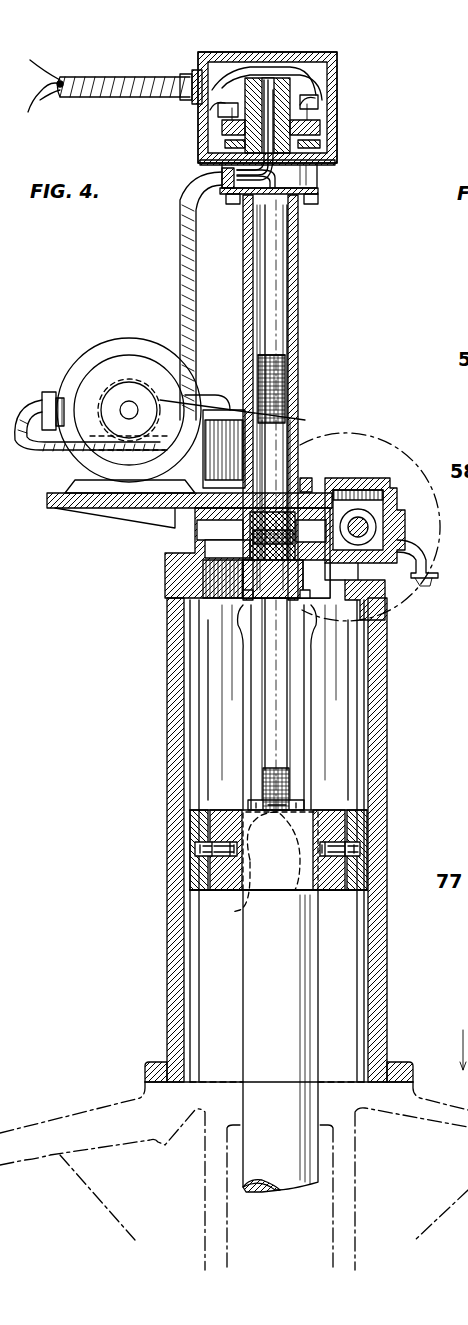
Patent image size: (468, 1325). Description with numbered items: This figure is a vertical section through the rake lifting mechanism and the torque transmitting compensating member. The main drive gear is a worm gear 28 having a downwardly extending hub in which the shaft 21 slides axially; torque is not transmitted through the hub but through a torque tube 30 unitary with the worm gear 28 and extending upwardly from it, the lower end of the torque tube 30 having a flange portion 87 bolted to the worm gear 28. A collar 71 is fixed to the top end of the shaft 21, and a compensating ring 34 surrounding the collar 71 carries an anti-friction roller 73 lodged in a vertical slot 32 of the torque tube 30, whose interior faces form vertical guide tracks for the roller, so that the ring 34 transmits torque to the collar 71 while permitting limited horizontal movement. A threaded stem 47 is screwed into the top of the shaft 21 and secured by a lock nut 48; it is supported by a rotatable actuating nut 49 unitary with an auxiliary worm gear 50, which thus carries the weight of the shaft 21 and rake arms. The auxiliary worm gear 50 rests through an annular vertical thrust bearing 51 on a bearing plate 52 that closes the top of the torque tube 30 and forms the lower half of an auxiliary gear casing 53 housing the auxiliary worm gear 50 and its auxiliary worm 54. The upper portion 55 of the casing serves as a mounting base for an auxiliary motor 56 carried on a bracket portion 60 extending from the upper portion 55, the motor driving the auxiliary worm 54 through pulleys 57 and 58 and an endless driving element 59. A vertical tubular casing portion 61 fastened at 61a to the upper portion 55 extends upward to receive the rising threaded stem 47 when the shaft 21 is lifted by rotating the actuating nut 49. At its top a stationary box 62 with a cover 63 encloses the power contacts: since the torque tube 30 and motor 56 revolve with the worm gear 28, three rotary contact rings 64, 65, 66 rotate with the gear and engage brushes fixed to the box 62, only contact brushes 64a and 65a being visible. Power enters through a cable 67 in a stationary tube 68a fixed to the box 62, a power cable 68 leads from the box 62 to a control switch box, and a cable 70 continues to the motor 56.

The shaft 21 is at (250, 1096).
The worm gear 28 is at (89, 1109).
The torque tube 30 is at (388, 768).
The vertical slot 32 is at (301, 733).
The compensating ring 34 is at (355, 810).
The threaded stem 47 is at (265, 735).
The lock nut 48 is at (255, 800).
The actuating nut 49 is at (308, 640).
The auxiliary worm gear 50 is at (170, 562).
The annular vertical thrust bearing 51 is at (212, 598).
The bearing plate 52 is at (190, 600).
The auxiliary gear casing 53 is at (168, 532).
The auxiliary worm 54 is at (360, 516).
The upper portion of auxiliary gear casing 55 is at (392, 508).
The auxiliary motor 56 is at (112, 340).
The pulley 57 is at (103, 398).
The pulley 58 is at (422, 470).
The endless driving element 59 is at (322, 425).
The bracket portion 60 is at (54, 510).
The vertical tubular casing portion 61 is at (298, 320).
The fastening 61a is at (310, 480).
The stationary box 62 is at (356, 111).
The cover 63 is at (305, 70).
The rotary contact ring 64 is at (310, 120).
The contact brush 64a is at (220, 128).
The rotary contact ring 65 is at (210, 110).
The contact brush 65a is at (322, 96).
The rotary contact ring 66 is at (305, 68).
The cable 67 is at (44, 90).
The power cable 68 is at (172, 260).
The stationary tube 68a is at (132, 76).
The cable 70 is at (38, 450).
The collar 71 is at (333, 890).
The anti-friction roller 73 is at (240, 924).
The flange portion 87 is at (162, 1060).